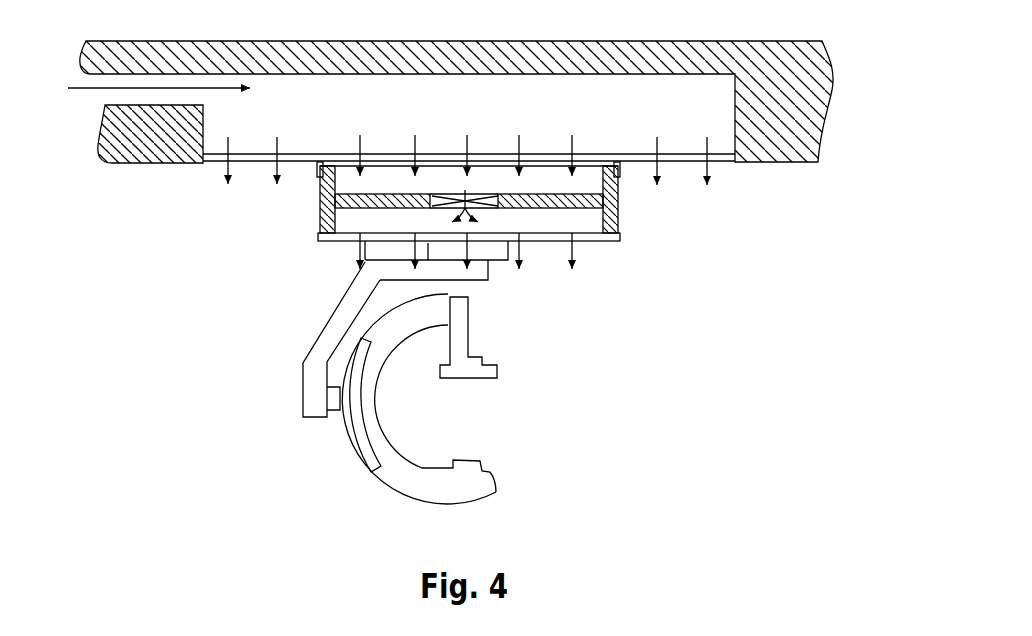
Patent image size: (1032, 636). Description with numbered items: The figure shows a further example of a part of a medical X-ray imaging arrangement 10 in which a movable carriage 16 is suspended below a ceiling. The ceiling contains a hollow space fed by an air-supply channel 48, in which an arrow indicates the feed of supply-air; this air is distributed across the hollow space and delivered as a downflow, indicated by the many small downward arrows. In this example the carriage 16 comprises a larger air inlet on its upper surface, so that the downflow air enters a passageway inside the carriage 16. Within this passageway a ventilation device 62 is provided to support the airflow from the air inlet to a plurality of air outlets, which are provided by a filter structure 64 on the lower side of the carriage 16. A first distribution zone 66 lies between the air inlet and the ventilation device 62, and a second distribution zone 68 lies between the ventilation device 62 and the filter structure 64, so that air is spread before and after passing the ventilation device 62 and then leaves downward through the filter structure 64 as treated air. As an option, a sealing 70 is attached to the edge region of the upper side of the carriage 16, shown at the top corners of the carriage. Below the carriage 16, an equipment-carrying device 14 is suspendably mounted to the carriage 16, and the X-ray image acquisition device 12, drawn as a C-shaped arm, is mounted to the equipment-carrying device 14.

The medical X-ray imaging arrangement 10 is at (516, 222).
The X-ray image acquisition device 12 is at (331, 460).
The equipment-carrying device 14 is at (498, 258).
The carriage 16 is at (417, 222).
The air-supply channel 48 is at (92, 88).
The ventilation device 62 is at (482, 197).
The filter structure 64 is at (340, 243).
The first distribution zone 66 is at (372, 172).
The second distribution zone 68 is at (588, 222).
The sealing 70 is at (317, 168).